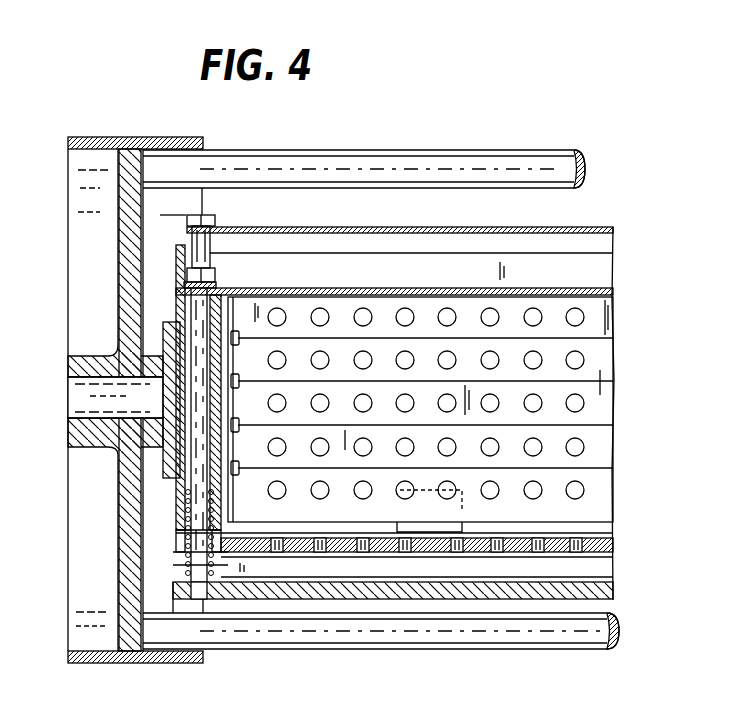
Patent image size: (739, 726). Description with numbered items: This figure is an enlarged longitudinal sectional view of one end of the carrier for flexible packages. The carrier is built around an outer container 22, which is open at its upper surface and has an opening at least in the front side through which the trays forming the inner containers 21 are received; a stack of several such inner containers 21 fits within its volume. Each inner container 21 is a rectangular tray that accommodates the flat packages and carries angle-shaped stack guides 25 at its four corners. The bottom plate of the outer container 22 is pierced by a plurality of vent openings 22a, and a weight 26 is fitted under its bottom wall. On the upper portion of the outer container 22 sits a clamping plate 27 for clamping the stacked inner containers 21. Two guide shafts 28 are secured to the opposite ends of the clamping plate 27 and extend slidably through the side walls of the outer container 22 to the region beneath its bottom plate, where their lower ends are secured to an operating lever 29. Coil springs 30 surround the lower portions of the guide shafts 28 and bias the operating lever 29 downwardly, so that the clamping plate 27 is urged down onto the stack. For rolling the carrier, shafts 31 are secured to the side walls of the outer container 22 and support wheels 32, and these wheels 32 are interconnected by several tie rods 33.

The inner container 21 is at (383, 310).
The outer container 22 is at (373, 555).
The vent openings 22a is at (456, 553).
The stack guides 25 is at (239, 330).
The weight 26 is at (587, 572).
The clamping plate 27 is at (543, 295).
The guide shafts 28 is at (180, 340).
The operating lever 29 is at (273, 592).
The coil springs 30 is at (181, 567).
The shafts 31 is at (80, 405).
The wheels 32 is at (118, 233).
The tie rods 33 is at (387, 151).